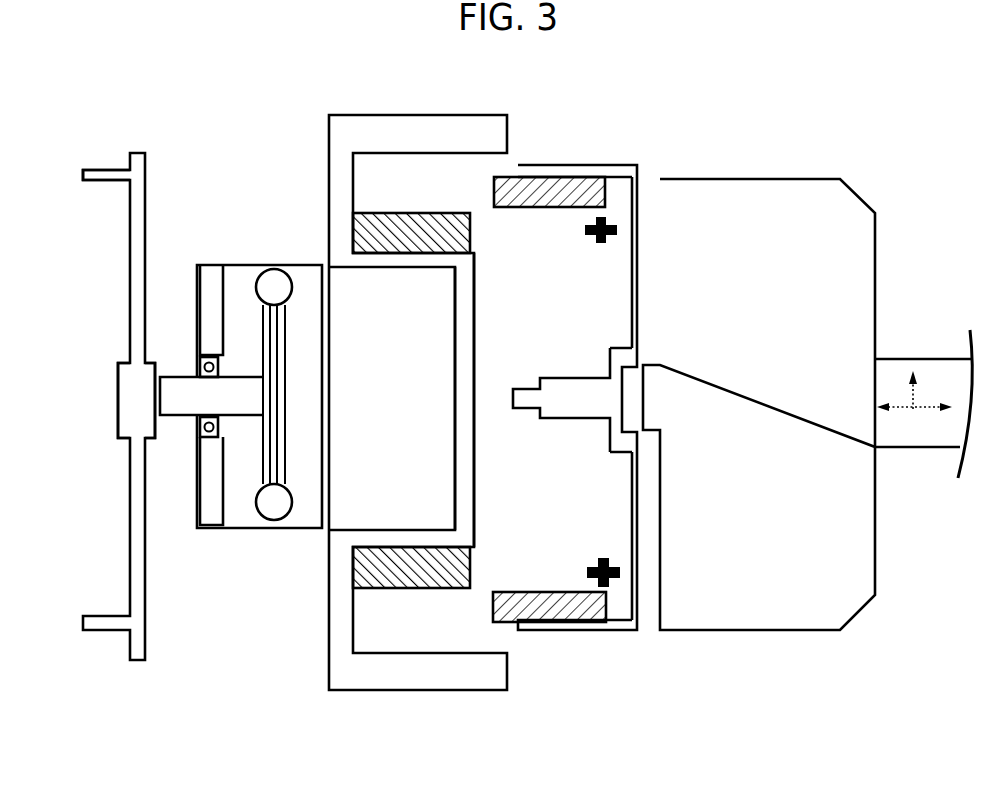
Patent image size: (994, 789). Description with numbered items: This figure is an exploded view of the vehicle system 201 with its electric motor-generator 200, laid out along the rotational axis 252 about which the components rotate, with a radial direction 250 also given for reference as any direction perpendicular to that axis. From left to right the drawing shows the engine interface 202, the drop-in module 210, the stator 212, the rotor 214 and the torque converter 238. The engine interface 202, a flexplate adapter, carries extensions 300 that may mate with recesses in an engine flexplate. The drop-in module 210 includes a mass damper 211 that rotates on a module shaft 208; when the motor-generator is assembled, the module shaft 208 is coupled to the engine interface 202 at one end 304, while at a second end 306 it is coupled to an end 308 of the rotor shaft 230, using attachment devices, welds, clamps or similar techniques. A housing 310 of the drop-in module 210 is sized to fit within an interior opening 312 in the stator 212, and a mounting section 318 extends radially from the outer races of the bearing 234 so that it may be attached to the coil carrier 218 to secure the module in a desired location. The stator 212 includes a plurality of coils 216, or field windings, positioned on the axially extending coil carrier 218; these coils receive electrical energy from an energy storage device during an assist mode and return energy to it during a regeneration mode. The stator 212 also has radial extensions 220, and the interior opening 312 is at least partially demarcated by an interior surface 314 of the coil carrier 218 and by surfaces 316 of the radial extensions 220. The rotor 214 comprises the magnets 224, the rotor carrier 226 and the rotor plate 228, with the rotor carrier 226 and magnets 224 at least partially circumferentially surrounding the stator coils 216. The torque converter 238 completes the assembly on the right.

The electric motor-generator 200 is at (113, 104).
The vehicle system 201 is at (909, 132).
The engine interface 202 is at (155, 155).
The module shaft 208 is at (181, 387).
The drop-in module 210 is at (153, 250).
The mass damper 211 is at (302, 464).
The stator 212 is at (427, 76).
The rotor 214 is at (564, 104).
The coils 216 is at (396, 232).
The coil carrier 218 is at (386, 284).
The radial extensions 220 is at (474, 298).
The magnets 224 is at (522, 201).
The rotor carrier 226 is at (581, 173).
The rotor plate 228 is at (437, 408).
The rotor shaft 230 is at (571, 390).
The bearing 234 is at (215, 357).
The torque converter 238 is at (647, 180).
The radial direction 250 is at (912, 390).
The rotational axis 252 is at (928, 409).
The extensions 300 is at (100, 181).
The one end 304 is at (157, 397).
The second end 306 is at (281, 393).
The end 308 is at (509, 396).
The housing 310 is at (302, 264).
The interior opening 312 is at (373, 402).
The interior surface 314 is at (362, 268).
The surfaces 316 is at (455, 350).
The mounting section 318 is at (222, 281).